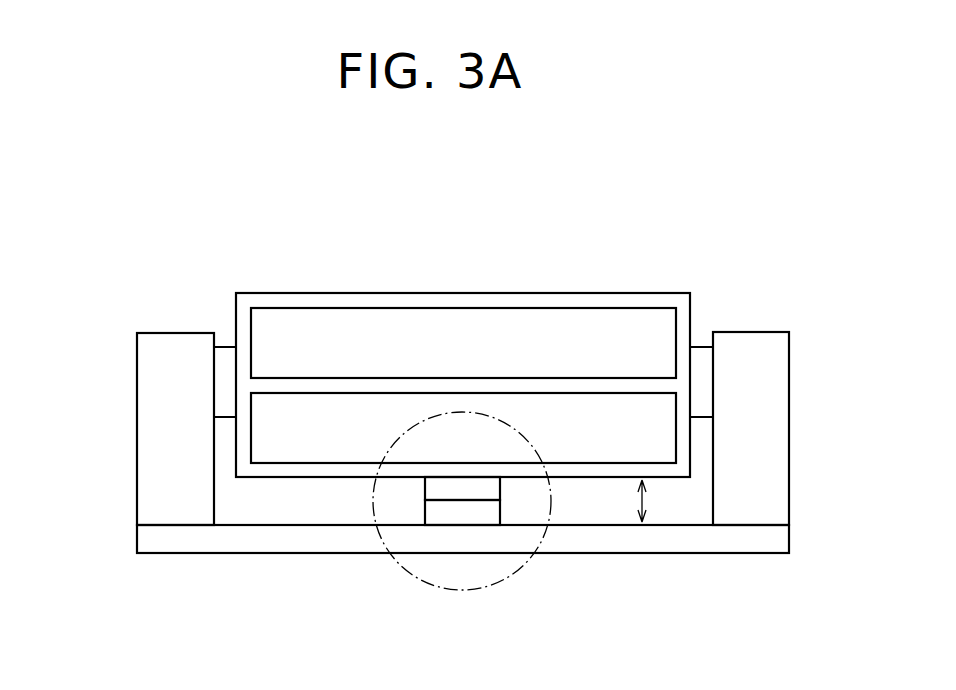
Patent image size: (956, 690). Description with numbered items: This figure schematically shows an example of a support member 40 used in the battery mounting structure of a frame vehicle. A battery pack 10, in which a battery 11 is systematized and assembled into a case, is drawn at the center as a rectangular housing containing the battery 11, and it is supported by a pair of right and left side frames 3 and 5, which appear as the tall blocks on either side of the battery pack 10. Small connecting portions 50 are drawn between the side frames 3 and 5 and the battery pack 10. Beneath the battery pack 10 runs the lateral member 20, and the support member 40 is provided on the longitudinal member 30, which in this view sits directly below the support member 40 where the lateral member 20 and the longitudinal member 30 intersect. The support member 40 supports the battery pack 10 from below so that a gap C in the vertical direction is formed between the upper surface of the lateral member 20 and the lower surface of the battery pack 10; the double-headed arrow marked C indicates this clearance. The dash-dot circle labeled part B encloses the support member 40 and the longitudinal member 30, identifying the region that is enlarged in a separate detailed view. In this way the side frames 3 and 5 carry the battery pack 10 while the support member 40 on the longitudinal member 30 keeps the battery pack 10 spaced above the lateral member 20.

The side frame 3 is at (745, 373).
The side frame 5 is at (177, 363).
The battery pack 10 is at (357, 300).
The battery 11 is at (582, 332).
The lateral member 20 is at (328, 535).
The longitudinal member 30 is at (462, 513).
The support member 40 is at (485, 488).
The connection portion 50 is at (223, 357).
The part B is at (500, 582).
The gap C is at (652, 501).